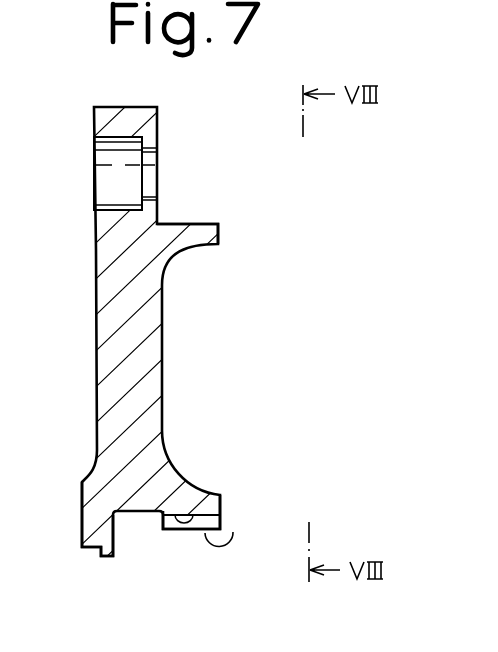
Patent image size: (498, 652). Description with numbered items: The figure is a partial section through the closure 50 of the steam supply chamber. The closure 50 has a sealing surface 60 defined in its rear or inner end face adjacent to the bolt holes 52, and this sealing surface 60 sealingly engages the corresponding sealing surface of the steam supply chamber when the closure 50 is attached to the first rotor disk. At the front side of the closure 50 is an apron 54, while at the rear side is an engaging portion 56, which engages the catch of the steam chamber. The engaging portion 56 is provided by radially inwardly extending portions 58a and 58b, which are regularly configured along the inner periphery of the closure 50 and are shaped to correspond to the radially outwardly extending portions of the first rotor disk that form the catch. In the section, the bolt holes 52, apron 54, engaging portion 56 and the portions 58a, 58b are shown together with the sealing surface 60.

The closure 50 is at (163, 135).
The bolt holes 52 is at (113, 139).
The apron 54 is at (100, 532).
The engaging portion 56 is at (199, 552).
The radially inwardly extending portion 58a is at (233, 532).
The radially inwardly extending portion 58b is at (192, 515).
The sealing surface 60 is at (173, 223).